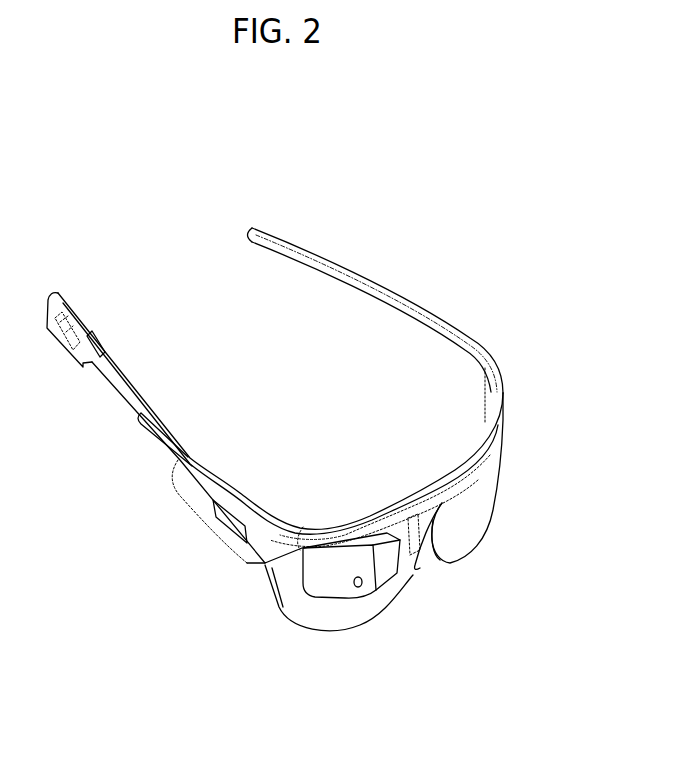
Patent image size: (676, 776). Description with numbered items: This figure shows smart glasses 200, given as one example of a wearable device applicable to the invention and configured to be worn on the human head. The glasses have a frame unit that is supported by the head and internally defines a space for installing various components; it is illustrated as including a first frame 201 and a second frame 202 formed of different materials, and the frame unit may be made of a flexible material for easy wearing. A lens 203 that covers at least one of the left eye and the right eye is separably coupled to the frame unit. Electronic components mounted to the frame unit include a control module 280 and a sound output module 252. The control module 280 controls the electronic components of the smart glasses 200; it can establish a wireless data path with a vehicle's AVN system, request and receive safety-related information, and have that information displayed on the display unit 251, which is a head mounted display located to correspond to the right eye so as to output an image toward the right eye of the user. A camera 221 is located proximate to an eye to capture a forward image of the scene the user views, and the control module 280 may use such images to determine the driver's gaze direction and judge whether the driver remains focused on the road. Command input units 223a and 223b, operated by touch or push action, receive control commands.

The smart glasses 200 is at (343, 200).
The first frame 201 is at (395, 290).
The second frame 202 is at (122, 378).
The lens 203 is at (483, 490).
The camera 221 is at (365, 590).
The command input unit 223a is at (95, 340).
The command input unit 223b is at (230, 527).
The display unit 251 is at (387, 560).
The sound output module 252 is at (63, 335).
The control module 280 is at (187, 485).